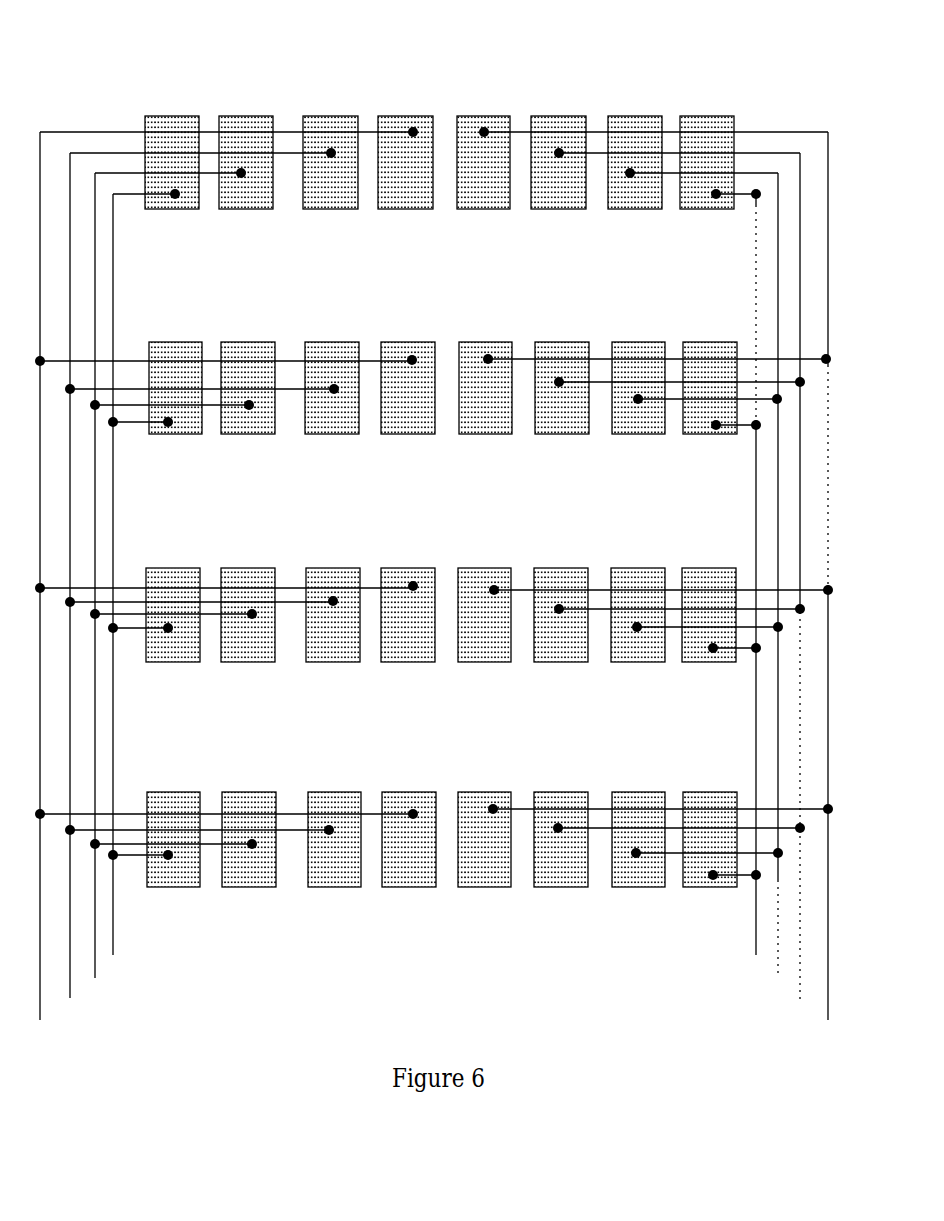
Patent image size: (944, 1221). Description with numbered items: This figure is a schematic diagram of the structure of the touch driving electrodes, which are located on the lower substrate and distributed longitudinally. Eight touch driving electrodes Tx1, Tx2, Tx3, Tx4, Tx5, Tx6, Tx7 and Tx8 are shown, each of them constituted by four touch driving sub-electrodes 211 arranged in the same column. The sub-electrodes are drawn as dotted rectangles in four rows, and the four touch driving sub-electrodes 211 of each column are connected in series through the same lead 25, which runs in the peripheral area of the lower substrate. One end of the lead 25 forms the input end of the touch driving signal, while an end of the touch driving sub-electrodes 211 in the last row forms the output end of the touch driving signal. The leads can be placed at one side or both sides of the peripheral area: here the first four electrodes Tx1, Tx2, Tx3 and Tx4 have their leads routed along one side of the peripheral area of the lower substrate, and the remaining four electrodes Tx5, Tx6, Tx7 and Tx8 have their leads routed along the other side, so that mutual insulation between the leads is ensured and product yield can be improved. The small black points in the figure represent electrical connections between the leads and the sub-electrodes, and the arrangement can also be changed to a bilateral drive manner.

The touch driving sub-electrode 211 is at (173, 138).
The lead 25 is at (753, 132).
The touch driving electrode Tx1 is at (173, 887).
The touch driving electrode Tx2 is at (248, 887).
The touch driving electrode Tx3 is at (333, 887).
The touch driving electrode Tx4 is at (408, 887).
The touch driving electrode Tx5 is at (484, 887).
The touch driving electrode Tx6 is at (560, 887).
The touch driving electrode Tx7 is at (641, 887).
The touch driving electrode Tx8 is at (712, 887).